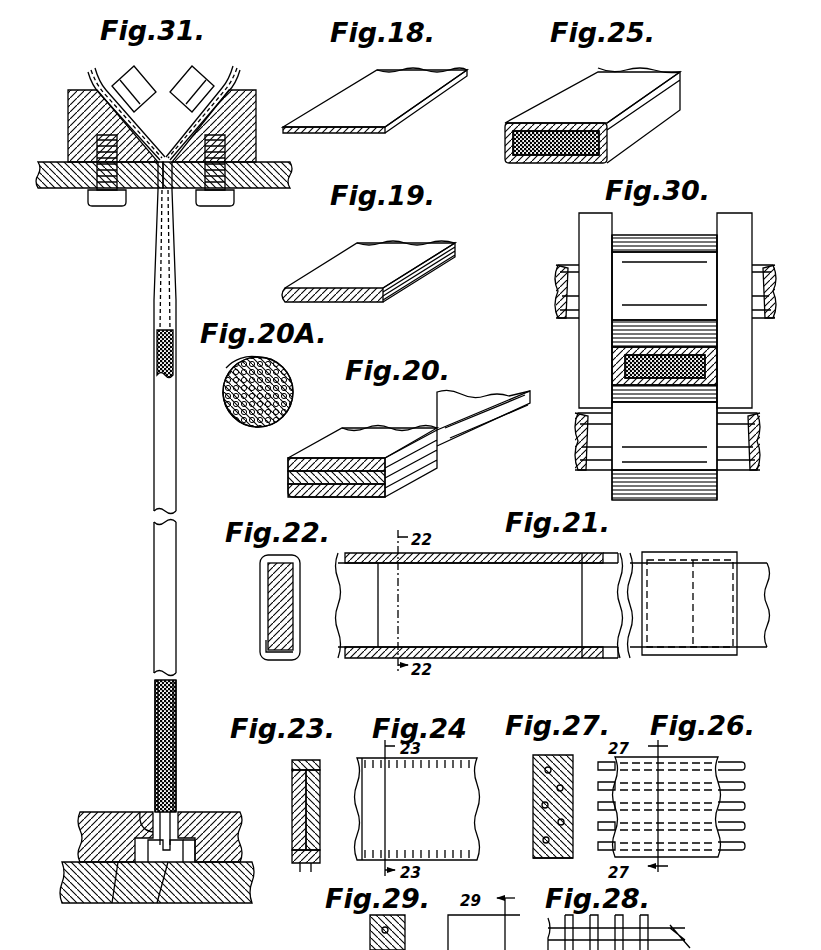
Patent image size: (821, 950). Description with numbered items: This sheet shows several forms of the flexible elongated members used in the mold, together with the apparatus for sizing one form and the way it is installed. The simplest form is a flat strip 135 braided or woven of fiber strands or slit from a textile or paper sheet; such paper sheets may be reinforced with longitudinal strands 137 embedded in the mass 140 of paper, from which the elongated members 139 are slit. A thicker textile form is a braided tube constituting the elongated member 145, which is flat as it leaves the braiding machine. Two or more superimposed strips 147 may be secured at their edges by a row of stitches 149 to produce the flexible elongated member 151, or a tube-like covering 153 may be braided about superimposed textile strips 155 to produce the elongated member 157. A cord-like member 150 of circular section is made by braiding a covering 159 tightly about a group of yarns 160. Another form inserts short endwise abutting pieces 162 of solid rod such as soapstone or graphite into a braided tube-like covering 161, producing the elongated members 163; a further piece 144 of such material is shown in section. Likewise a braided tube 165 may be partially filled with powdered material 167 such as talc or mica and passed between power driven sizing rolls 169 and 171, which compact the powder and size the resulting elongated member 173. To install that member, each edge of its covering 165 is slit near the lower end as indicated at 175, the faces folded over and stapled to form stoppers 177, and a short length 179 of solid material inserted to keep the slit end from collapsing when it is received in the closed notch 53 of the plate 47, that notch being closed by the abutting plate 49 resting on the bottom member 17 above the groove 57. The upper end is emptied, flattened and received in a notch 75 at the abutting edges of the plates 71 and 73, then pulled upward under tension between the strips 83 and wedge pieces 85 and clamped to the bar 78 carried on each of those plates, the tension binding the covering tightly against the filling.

In FIG. 31, the bottom member 17 is at (216, 880).
In FIG. 31, the plate 47 is at (98, 812).
In FIG. 31, the plate 49 is at (216, 815).
In FIG. 31, the notches 53 is at (148, 822).
In FIG. 31, the groove 57 is at (124, 868).
In FIG. 31, the plate 71 is at (47, 186).
In FIG. 31, the plate 73 is at (276, 186).
In FIG. 31, the notches 75 is at (156, 172).
In FIG. 31, the bar 78 is at (78, 117).
In FIG. 31, the strip 83 is at (112, 86).
In FIG. 31, the wedge piece 85 is at (178, 88).
In FIG. 18, the flat strip 135 is at (404, 96).
In FIG. 27, the reinforcing strands 137 is at (552, 768).
In FIG. 26, the reinforcing strands 137 is at (746, 848).
In FIG. 27, the elongated member 139 is at (542, 832).
In FIG. 26, the elongated member 139 is at (702, 754).
In FIG. 27, the mass of paper 140 is at (548, 870).
In FIG. 29, the block 144 is at (372, 930).
In FIG. 19, the braided tube elongated member 145 is at (398, 265).
In FIG. 23, the superimposed strips 147 is at (302, 866).
In FIG. 24, the superimposed strips 147 is at (462, 786).
In FIG. 23, the stitches 149 is at (294, 768).
In FIG. 24, the stitches 149 is at (470, 767).
In FIG. 20A, the cable 150 is at (283, 372).
In FIG. 23, the flexible elongated member 151 is at (290, 790).
In FIG. 24, the flexible elongated member 151 is at (479, 815).
In FIG. 20, the tube-like covering 153 is at (318, 460).
In FIG. 20, the textile strips 155 is at (455, 413).
In FIG. 20, the elongated member 157 is at (405, 466).
In FIG. 20A, the braided covering 159 is at (236, 374).
In FIG. 20A, the yarns 160 is at (235, 410).
In FIG. 22, the tube-like covering 161 is at (266, 652).
In FIG. 21, the tube-like covering 161 is at (557, 567).
In FIG. 22, the pieces of solid rod 162 is at (291, 620).
In FIG. 21, the pieces of solid rod 162 is at (561, 630).
In FIG. 22, the elongated member 163 is at (260, 591).
In FIG. 21, the elongated member 163 is at (661, 658).
In FIG. 31, the tube 165 is at (155, 692).
In FIG. 25, the tube 165 is at (580, 158).
In FIG. 30, the tube 165 is at (620, 355).
In FIG. 31, the powdered material 167 is at (156, 708).
In FIG. 25, the powdered material 167 is at (526, 158).
In FIG. 30, the powdered material 167 is at (620, 370).
In FIG. 30, the sizing roll 169 is at (672, 246).
In FIG. 30, the sizing roll 171 is at (677, 480).
In FIG. 31, the elongated member 173 is at (152, 583).
In FIG. 25, the elongated member 173 is at (646, 114).
In FIG. 30, the elongated member 173 is at (677, 384).
In FIG. 31, the slit 175 is at (178, 810).
In FIG. 31, the stoppers 177 is at (236, 849).
In FIG. 31, the short length of solid material 179 is at (168, 862).